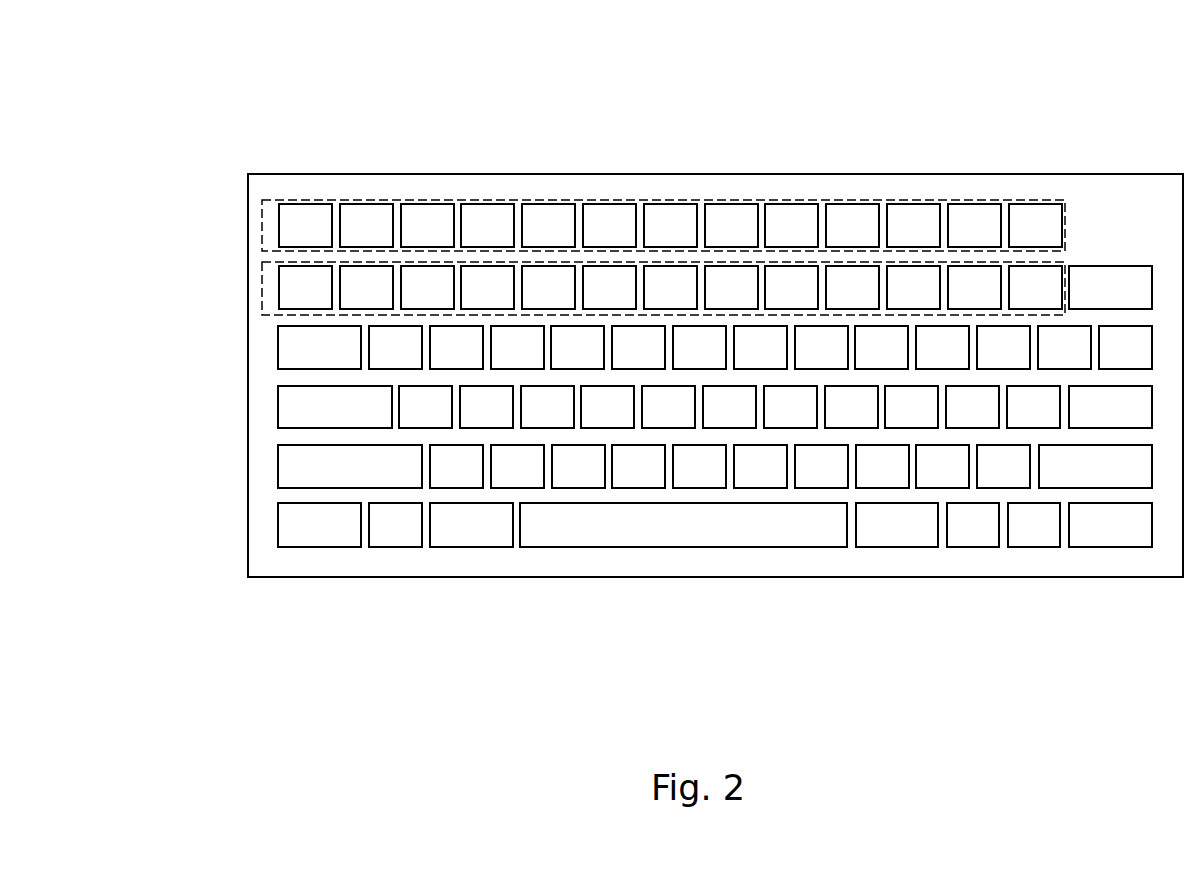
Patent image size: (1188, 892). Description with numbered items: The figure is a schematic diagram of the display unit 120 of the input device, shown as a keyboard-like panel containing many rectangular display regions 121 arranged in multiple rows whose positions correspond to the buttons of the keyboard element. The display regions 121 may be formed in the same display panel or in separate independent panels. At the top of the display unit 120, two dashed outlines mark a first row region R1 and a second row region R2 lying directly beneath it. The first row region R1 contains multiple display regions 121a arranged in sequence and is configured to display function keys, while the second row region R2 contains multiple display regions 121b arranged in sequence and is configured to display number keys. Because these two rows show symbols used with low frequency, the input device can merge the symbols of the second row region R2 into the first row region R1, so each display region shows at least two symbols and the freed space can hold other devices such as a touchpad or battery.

The display unit 120 is at (168, 87).
The display regions 121 is at (585, 538).
The display regions of the first row region 121a is at (285, 214).
The display regions of the second row region 121b is at (285, 278).
The first row region R1 is at (264, 238).
The second row region R2 is at (264, 303).